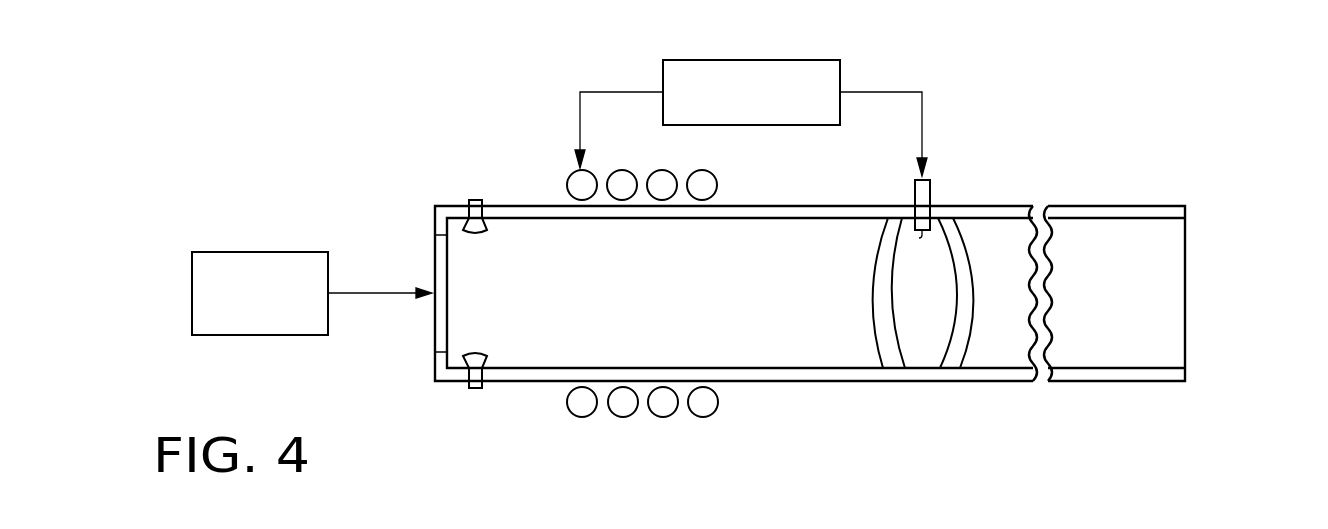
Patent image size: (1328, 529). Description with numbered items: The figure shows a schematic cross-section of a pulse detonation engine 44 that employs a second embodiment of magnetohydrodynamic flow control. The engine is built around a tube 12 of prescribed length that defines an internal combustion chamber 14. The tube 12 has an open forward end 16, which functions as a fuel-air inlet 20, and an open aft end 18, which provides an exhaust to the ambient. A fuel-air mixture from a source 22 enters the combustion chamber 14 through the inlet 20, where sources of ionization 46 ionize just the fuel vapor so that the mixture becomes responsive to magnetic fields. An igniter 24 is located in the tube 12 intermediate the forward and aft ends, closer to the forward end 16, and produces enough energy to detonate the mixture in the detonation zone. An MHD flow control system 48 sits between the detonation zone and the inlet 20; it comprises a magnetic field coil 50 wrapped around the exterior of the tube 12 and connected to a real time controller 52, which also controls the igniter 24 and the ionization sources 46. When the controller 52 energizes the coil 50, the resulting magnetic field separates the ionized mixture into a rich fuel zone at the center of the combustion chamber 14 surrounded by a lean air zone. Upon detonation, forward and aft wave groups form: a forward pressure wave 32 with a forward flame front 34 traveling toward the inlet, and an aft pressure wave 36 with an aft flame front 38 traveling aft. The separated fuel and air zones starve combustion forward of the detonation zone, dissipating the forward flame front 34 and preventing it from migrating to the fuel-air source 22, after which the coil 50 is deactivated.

The tube 12 is at (842, 375).
The combustion chamber 14 is at (518, 266).
The open forward end 16 is at (435, 216).
The open aft end 18 is at (1185, 323).
The fuel-air inlet 20 is at (441, 350).
The fuel-air source 22 is at (248, 252).
The igniter 24 is at (928, 194).
The forward pressure wave 32 is at (872, 303).
The forward flame front 34 is at (888, 310).
The aft pressure wave 36 is at (962, 347).
The aft flame front 38 is at (957, 302).
The pulse detonation engine 44 is at (1207, 183).
The sources of ionization 46 is at (477, 200).
The MHD flow control system 48 is at (488, 110).
The magnetic field coil 50 is at (700, 168).
The real time controller 52 is at (775, 126).